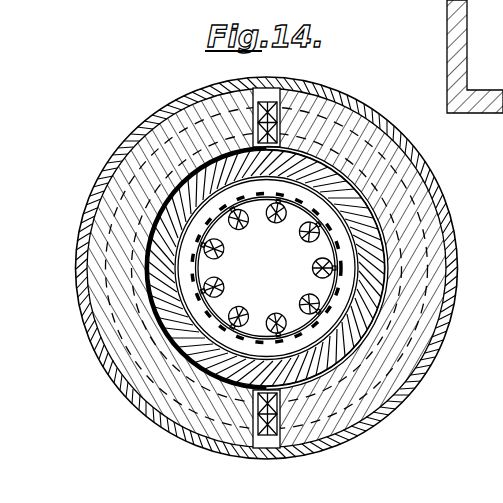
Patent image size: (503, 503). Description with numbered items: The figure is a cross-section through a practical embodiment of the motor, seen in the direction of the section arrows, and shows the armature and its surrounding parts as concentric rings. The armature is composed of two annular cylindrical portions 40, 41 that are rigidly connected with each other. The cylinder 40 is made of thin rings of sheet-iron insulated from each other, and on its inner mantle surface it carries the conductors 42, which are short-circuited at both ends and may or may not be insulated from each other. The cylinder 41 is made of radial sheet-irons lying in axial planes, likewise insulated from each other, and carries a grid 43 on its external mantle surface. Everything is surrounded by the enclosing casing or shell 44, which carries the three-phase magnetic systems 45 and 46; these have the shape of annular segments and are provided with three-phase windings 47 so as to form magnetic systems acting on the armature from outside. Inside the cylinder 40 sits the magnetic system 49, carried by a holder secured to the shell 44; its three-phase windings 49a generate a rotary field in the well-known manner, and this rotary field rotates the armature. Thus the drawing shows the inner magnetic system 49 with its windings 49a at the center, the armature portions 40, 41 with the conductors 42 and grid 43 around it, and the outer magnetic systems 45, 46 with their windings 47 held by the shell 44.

The annular cylindrical portion 40 is at (247, 172).
The annular cylindrical portion 41 is at (208, 207).
The conductors 42 is at (160, 207).
The grid 43 is at (160, 204).
The enclosing casing or shell 44 is at (97, 224).
The three-phase magnetic system 45 is at (110, 263).
The three-phase magnetic system 46 is at (378, 164).
The three-phase windings 47 is at (305, 92).
The magnetic system 49 is at (242, 300).
The three-phase windings 49a is at (222, 318).